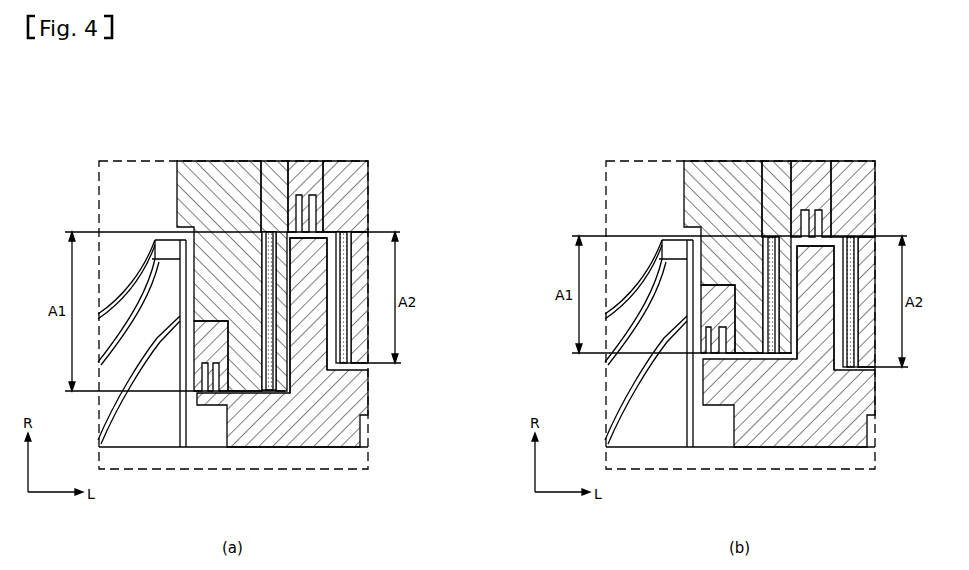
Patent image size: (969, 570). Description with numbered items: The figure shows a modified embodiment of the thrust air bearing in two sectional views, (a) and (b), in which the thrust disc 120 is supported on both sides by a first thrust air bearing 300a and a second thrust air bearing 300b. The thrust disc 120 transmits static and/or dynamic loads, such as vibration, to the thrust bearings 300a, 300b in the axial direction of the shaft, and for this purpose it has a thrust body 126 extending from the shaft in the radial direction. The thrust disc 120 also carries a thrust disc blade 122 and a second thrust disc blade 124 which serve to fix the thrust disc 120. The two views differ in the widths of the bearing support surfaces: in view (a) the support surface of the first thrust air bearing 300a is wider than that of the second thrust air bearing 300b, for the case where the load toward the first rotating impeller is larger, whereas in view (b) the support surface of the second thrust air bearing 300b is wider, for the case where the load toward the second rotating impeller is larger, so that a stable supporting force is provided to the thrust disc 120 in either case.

The thrust disc 120 is at (338, 452).
The thrust disc blade 122 is at (263, 440).
The second thrust disc blade 124 is at (370, 393).
The thrust body 126 is at (297, 333).
The first thrust air bearing 300a is at (267, 228).
The second thrust air bearing 300b is at (346, 228).